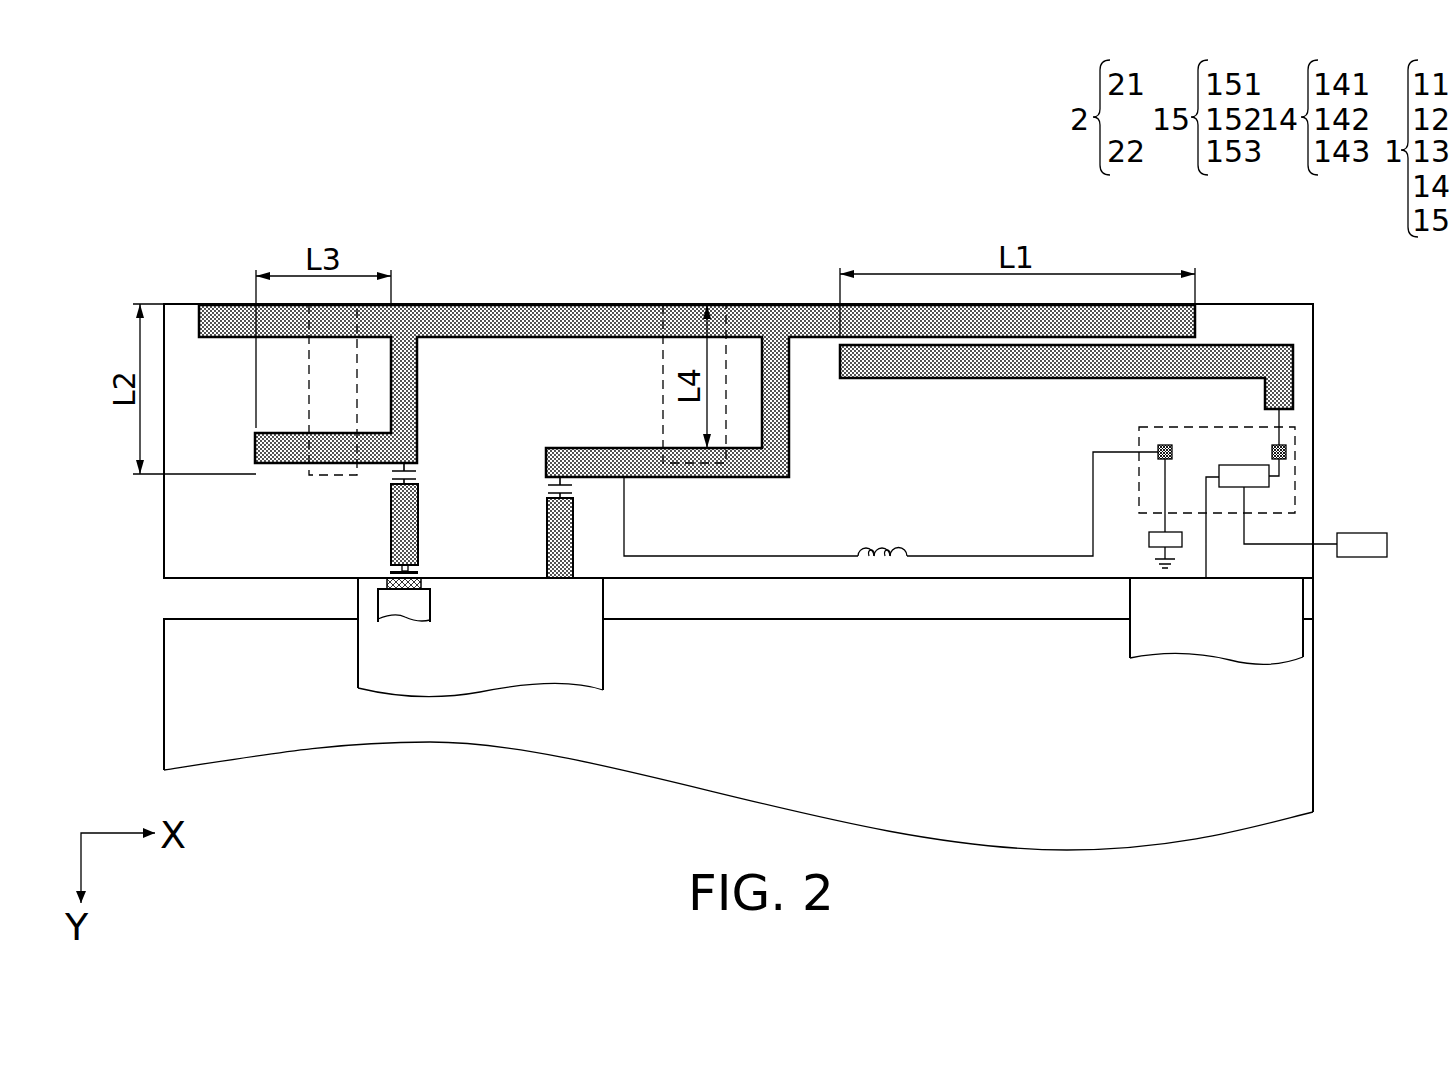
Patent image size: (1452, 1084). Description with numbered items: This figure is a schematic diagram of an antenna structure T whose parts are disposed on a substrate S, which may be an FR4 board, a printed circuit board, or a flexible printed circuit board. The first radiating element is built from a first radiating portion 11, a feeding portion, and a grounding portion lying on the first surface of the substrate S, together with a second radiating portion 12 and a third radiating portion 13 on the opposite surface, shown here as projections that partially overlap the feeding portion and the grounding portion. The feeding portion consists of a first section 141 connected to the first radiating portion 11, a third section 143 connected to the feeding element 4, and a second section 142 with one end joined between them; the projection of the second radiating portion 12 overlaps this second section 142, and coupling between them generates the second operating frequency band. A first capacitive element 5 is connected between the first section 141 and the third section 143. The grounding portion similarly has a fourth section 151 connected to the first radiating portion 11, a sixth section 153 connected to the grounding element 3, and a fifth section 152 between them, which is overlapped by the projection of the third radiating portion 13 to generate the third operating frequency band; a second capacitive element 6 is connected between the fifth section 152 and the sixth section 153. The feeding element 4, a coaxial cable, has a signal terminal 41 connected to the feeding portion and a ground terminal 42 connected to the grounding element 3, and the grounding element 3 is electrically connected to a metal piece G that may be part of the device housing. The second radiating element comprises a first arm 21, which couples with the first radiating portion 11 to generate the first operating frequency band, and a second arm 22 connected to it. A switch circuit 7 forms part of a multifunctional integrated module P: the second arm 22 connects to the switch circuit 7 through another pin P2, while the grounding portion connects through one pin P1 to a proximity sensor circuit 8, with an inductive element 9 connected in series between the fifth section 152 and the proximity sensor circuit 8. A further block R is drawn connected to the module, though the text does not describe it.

The first radiating portion 11 is at (556, 318).
The second radiating portion 12 is at (308, 403).
The third radiating portion 13 is at (663, 384).
The first section 141 is at (409, 383).
The second section 142 is at (262, 450).
The third section 143 is at (418, 537).
The fourth section 151 is at (777, 402).
The fifth section 152 is at (748, 478).
The sixth section 153 is at (553, 540).
The first arm 21 is at (1054, 368).
The second arm 22 is at (1284, 400).
The grounding element 3 is at (612, 653).
The feeding element 4 is at (440, 605).
The signal terminal 41 is at (403, 560).
The ground terminal 42 is at (386, 583).
The first capacitive element 5 is at (422, 468).
The second capacitive element 6 is at (543, 484).
The switch circuit 7 is at (1245, 465).
The proximity sensor circuit 8 is at (1149, 540).
The inductive element 9 is at (888, 538).
The multifunctional integrated module P is at (1295, 481).
The pin P1 is at (1172, 452).
The another pin P2 is at (1286, 452).
The radio frequency module R is at (1365, 540).
The substrate S is at (188, 522).
The antenna structure T is at (178, 270).
The metal piece G is at (1313, 737).